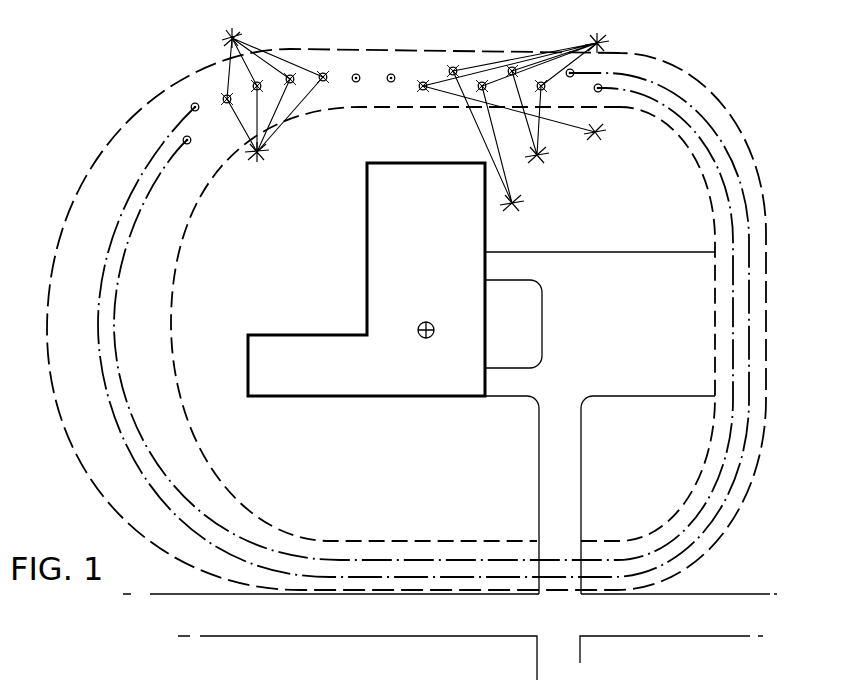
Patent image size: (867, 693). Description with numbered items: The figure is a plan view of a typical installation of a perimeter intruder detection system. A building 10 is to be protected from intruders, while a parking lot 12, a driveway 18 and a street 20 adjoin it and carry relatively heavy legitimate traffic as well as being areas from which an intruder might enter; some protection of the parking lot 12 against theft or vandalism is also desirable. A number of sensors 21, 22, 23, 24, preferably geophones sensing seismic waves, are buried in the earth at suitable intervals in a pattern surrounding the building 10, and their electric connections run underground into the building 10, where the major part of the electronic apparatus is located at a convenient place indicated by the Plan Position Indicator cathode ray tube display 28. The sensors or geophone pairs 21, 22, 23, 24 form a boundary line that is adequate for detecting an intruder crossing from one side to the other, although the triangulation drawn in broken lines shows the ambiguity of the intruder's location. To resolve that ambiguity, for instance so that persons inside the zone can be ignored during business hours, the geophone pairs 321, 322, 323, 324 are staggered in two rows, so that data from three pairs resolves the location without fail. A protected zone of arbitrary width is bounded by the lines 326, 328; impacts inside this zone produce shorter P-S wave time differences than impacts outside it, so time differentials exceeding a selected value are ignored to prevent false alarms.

The building 10 is at (413, 264).
The parking lot 12 is at (605, 342).
The driveway 18 is at (548, 489).
The street 20 is at (432, 627).
The sensor 21 is at (227, 104).
The sensor 22 is at (259, 81).
The sensor 23 is at (292, 74).
The sensor 24 is at (325, 82).
The Plan Position Indicator Cathode Ray Tube display 28 is at (426, 340).
The geophone pair 321 is at (423, 92).
The geophone pair 322 is at (453, 66).
The geophone pair 323 is at (482, 81).
The geophone pair 324 is at (512, 66).
The zone boundary line 326 is at (141, 108).
The zone boundary line 328 is at (189, 220).